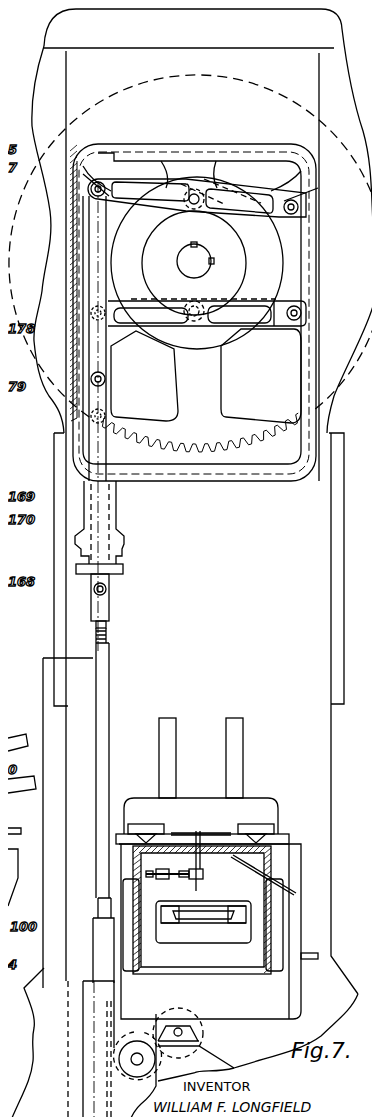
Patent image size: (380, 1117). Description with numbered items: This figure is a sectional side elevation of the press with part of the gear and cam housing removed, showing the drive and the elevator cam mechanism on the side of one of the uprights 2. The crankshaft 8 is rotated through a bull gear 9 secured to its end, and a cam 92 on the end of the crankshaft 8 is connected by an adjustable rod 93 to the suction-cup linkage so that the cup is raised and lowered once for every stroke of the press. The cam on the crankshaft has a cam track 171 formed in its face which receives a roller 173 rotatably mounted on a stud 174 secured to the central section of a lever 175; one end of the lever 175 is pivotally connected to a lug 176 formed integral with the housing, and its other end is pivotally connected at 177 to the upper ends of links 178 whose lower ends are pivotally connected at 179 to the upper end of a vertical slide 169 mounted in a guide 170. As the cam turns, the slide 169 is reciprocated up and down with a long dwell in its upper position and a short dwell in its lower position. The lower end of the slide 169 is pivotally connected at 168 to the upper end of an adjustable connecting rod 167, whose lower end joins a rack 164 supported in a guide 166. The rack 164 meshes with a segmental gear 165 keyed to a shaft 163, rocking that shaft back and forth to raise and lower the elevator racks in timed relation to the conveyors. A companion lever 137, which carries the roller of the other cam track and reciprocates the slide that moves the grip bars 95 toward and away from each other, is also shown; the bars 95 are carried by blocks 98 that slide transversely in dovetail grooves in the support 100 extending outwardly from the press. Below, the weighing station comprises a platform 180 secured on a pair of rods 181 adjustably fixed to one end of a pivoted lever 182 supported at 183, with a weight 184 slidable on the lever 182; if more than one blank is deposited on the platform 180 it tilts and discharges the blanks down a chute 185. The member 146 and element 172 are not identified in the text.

The uprights 2 is at (322, 731).
The crankshaft 8 is at (93, 15).
The bull gears 9 is at (258, 440).
The cam 92 is at (7, 258).
The adjustable rod 93 is at (7, 634).
The bars 95 is at (137, 825).
The blocks 98 is at (118, 840).
The support 100 is at (270, 857).
The lever 137 is at (130, 318).
The block 146 is at (232, 920).
The shaft 163 is at (136, 1058).
The rack 164 is at (107, 1013).
The segmental gear 165 is at (110, 1042).
The guide 166 is at (85, 1098).
The adjustable connecting rod 167 is at (108, 673).
The pivot connection 168 is at (110, 588).
The vertical slide 169 is at (108, 513).
The guide 170 is at (82, 498).
The cam track 171 is at (238, 318).
The slide bar 172 is at (107, 222).
The roller 173 is at (230, 190).
The stud 174 is at (193, 207).
The lever 175 is at (147, 180).
The lug 176 is at (296, 218).
The pivot connection 177 is at (88, 188).
The links 178 is at (90, 276).
The pivot connection 179 is at (105, 378).
The platform 180 is at (197, 832).
The rods 181 is at (203, 862).
The pivoted lever 182 is at (172, 878).
The pivot 183 is at (200, 878).
The weight 184 is at (160, 870).
The chute 185 is at (297, 893).